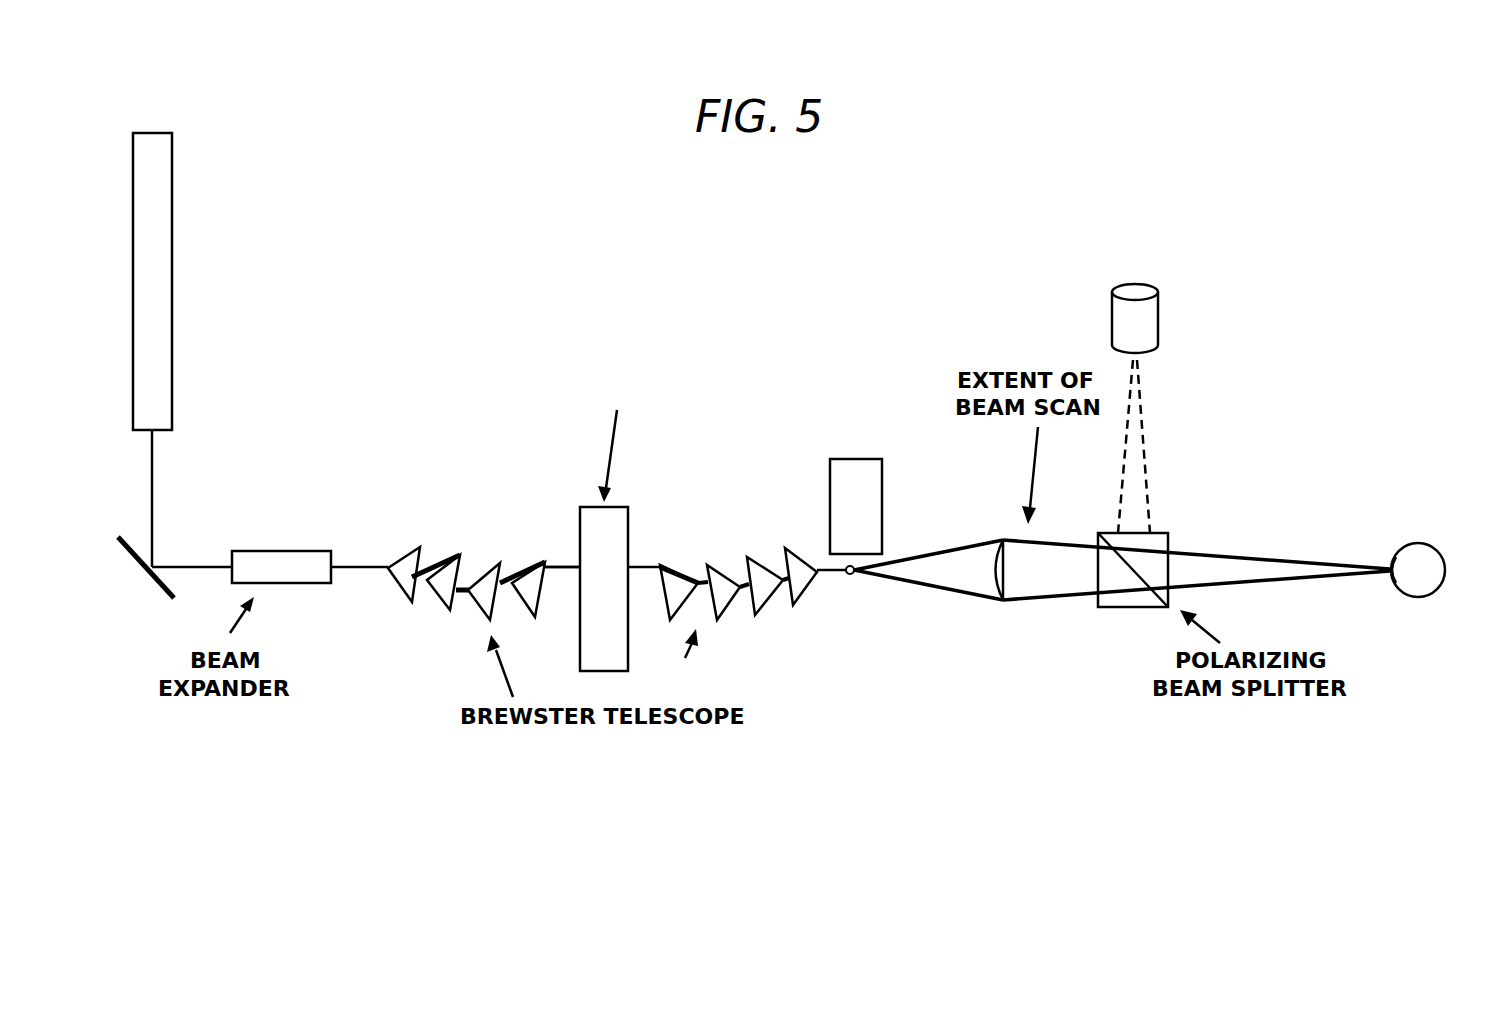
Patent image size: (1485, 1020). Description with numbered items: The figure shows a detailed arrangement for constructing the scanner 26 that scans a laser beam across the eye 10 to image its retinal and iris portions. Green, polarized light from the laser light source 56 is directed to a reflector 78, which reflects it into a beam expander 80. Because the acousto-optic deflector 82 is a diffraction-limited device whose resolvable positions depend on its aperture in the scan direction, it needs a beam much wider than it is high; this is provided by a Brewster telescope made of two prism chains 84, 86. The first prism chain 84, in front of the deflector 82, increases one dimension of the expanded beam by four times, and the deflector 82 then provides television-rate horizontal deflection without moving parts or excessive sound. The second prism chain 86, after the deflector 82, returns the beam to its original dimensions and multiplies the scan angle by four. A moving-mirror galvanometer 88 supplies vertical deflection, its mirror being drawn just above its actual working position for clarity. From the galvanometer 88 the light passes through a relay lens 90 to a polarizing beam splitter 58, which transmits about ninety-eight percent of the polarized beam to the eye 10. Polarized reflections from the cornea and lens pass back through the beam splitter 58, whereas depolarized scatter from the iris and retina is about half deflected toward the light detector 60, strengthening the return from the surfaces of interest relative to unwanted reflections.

The laser light source 56 is at (174, 297).
The reflector 78 is at (160, 598).
The beam expander 80 is at (285, 548).
The prism chain 84 is at (418, 547).
The scanner 26 is at (540, 490).
The acousto-optic deflector 82 is at (628, 523).
The prism chain 86 is at (712, 562).
The moving-mirror galvanometer 88 is at (830, 487).
The relay lens 90 is at (975, 540).
The polarizing beam splitter 58 is at (1121, 568).
The light detector 60 is at (1160, 292).
The eye 10 is at (1428, 596).